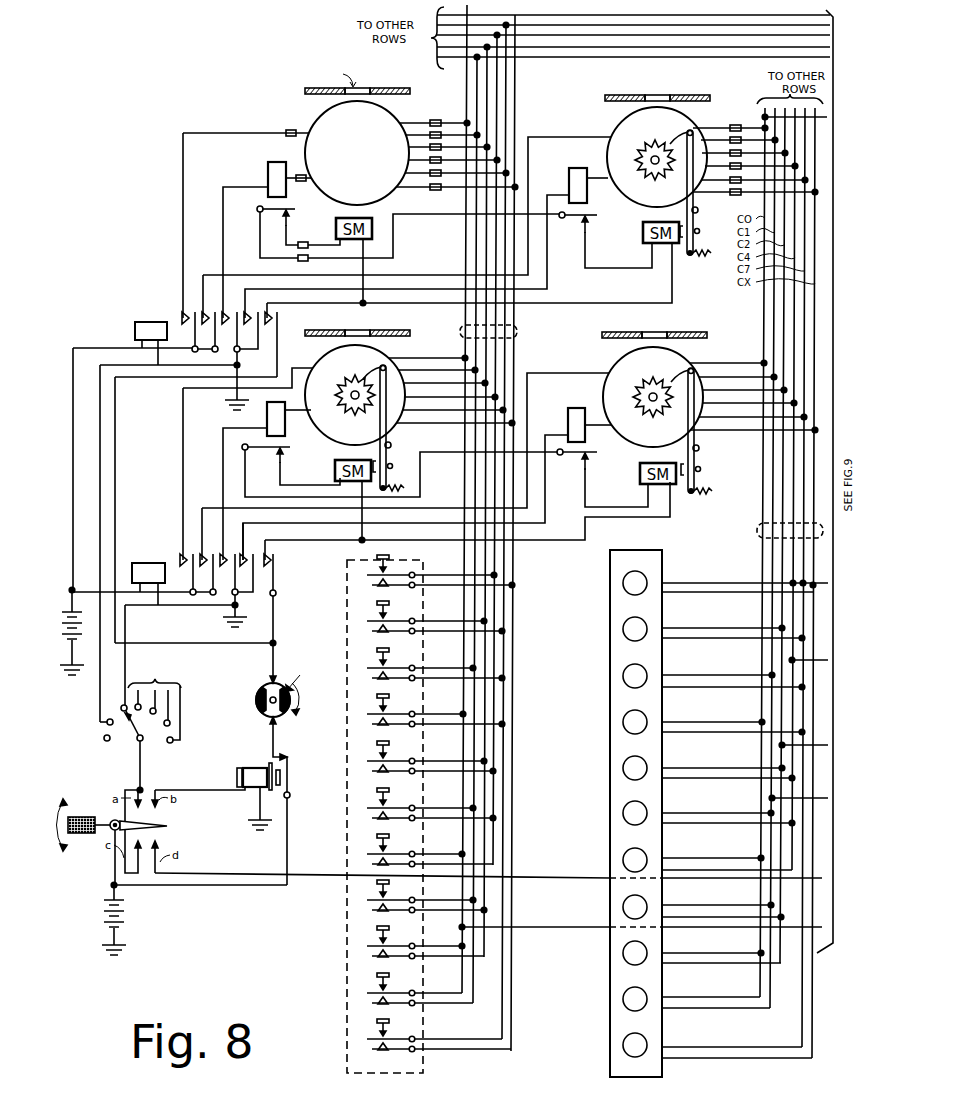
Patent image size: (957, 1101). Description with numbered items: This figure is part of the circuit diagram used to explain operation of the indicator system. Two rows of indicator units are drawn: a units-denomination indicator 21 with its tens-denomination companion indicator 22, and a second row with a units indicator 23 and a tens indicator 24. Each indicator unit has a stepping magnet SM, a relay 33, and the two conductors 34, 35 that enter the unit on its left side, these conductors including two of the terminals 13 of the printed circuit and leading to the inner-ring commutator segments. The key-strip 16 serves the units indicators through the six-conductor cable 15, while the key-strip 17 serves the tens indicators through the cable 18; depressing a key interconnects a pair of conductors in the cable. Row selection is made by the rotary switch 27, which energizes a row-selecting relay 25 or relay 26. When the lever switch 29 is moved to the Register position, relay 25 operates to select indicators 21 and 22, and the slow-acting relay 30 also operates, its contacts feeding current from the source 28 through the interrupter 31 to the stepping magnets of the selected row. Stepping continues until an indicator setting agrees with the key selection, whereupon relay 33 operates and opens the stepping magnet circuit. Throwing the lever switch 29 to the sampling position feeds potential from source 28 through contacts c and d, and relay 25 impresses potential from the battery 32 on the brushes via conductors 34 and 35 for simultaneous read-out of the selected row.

The terminals 13 is at (435, 118).
The cable 15 is at (757, 531).
The key-strip 16 is at (610, 608).
The key-strip 17 is at (347, 606).
The cable 18 is at (516, 334).
The indicator 21 is at (609, 362).
The indicator 22 is at (314, 360).
The indicator 23 is at (617, 120).
The indicator 24 is at (315, 120).
The row-selecting relay 25 is at (153, 557).
The row-selecting relay 26 is at (153, 316).
The rotary switch 27 is at (129, 721).
The source 28 is at (128, 926).
The lever switch 29 is at (170, 828).
The slow-acting relay 30 is at (254, 764).
The interrupter 31 is at (258, 702).
The battery 32 is at (54, 630).
The relay 33 is at (266, 178).
The conductor 34 is at (306, 184).
The conductor 35 is at (190, 132).